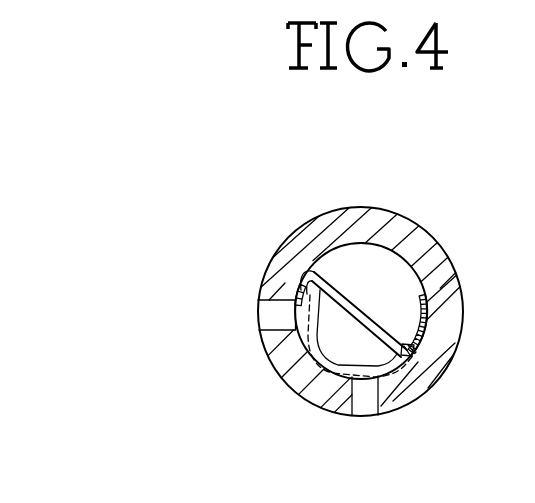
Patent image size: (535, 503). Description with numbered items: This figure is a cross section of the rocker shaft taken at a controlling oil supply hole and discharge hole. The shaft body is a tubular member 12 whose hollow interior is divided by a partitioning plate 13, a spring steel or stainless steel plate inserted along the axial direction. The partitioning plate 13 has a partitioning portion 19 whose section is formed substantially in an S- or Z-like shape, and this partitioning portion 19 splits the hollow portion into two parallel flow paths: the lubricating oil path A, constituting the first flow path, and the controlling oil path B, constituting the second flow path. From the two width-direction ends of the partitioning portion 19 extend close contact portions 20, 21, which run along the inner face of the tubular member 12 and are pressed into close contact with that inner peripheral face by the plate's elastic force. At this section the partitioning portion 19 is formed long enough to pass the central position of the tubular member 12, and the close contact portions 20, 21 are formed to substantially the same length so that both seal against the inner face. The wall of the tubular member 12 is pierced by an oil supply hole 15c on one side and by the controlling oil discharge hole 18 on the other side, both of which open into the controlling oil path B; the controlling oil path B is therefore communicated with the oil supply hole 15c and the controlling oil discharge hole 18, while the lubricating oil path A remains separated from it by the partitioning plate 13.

The tubular member 12 is at (415, 213).
The partitioning plate 13 is at (354, 302).
The oil supply hole 15c is at (368, 418).
The controlling oil discharge hole 18 is at (265, 317).
The partitioning portion 19 is at (414, 341).
The close contact portion 20 is at (296, 287).
The close contact portion 21 is at (428, 318).
The lubricating oil path A is at (357, 258).
The controlling oil path B is at (275, 356).